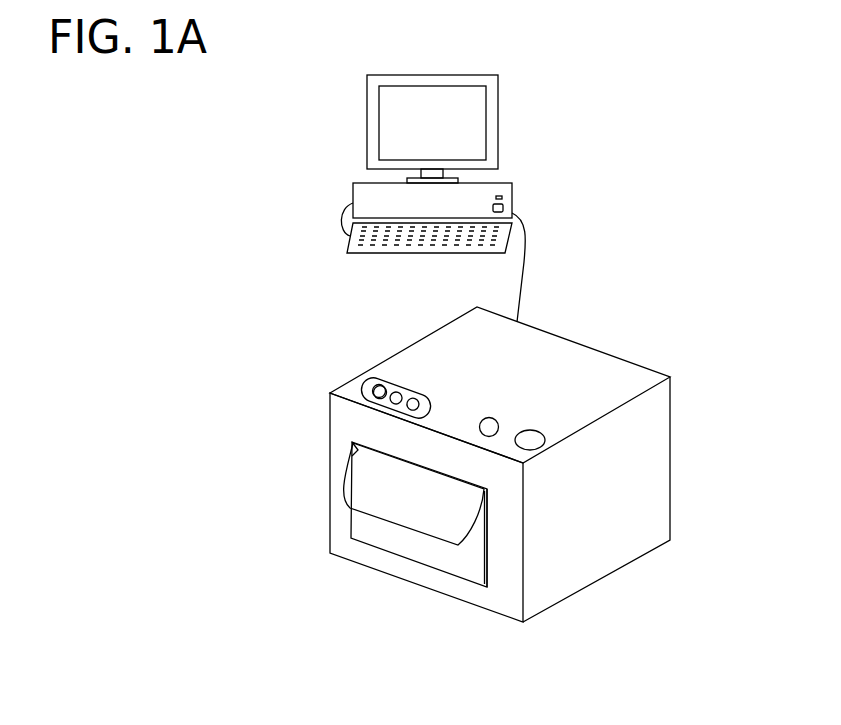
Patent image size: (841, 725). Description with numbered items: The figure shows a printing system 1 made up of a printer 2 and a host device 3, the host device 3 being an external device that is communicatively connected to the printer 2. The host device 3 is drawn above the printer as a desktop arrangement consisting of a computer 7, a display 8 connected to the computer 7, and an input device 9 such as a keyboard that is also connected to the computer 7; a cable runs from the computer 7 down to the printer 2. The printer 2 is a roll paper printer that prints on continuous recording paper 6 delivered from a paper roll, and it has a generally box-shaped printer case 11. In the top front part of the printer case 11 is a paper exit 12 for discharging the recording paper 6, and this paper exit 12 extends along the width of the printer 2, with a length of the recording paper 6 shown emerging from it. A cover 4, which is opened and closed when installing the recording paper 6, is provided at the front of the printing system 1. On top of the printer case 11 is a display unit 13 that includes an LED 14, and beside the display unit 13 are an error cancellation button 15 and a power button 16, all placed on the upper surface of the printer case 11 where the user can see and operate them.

The printing system 1 is at (719, 126).
The printer 2 is at (695, 350).
The host device 3 is at (515, 69).
The cover 4 is at (427, 550).
The recording paper 6 is at (378, 498).
The computer 7 is at (512, 193).
The display 8 is at (494, 128).
The input device 9 is at (352, 245).
The printer case 11 is at (579, 360).
The paper exit 12 is at (487, 490).
The display unit 13 is at (388, 378).
The LED 14 is at (372, 398).
The error cancellation button 15 is at (494, 421).
The power button 16 is at (536, 436).